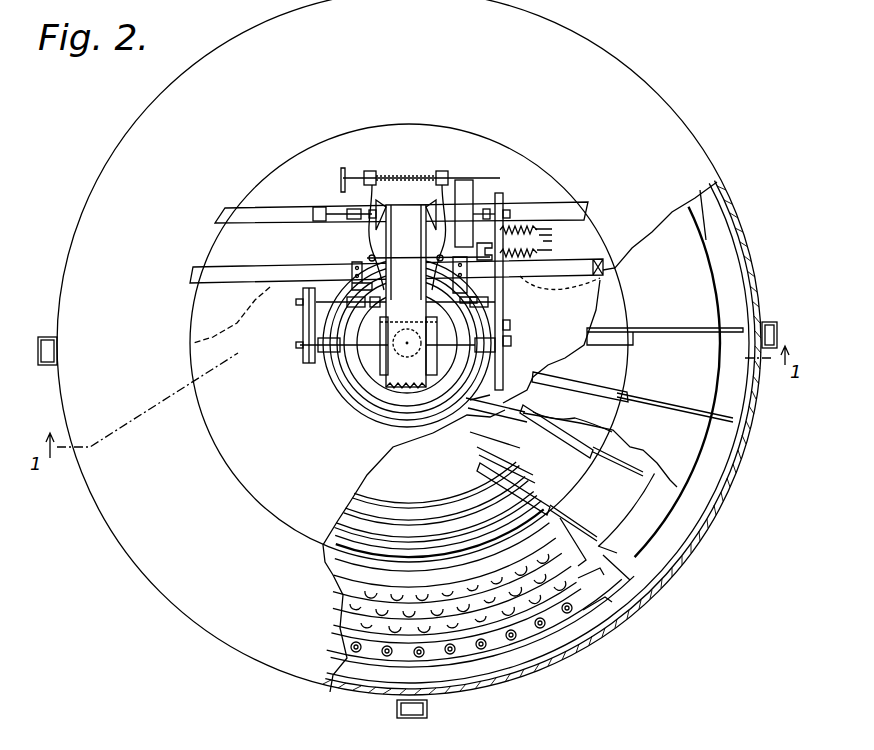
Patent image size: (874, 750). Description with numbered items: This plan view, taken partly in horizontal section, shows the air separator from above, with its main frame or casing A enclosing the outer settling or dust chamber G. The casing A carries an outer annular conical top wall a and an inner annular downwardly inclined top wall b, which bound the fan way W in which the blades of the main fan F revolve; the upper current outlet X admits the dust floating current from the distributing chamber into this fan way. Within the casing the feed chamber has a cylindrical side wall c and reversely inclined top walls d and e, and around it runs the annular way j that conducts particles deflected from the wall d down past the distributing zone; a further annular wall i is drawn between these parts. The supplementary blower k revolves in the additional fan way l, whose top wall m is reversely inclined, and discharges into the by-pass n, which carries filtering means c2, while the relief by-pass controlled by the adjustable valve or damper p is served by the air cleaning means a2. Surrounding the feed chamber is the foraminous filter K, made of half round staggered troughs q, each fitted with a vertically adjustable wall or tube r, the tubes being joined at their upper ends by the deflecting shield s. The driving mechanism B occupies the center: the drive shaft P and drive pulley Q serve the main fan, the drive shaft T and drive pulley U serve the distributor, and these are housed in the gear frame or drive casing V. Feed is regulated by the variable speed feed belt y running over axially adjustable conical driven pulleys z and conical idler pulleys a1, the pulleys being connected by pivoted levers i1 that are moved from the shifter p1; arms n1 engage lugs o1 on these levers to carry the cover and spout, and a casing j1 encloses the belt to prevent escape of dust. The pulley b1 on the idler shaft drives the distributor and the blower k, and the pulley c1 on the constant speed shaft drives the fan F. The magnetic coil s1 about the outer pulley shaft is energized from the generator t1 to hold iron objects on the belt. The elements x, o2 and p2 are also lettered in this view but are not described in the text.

The main frame or casing A is at (417, 359).
The outer annular conical top wall a is at (138, 397).
The inner annular inclined top wall b is at (489, 343).
The ring i is at (436, 498).
The cylindrical side wall c is at (512, 526).
The annular way or passage j is at (436, 527).
The filtering means c2 is at (522, 575).
The by-pass n is at (557, 545).
The inclined top wall d is at (548, 533).
The half round staggered troughs q is at (455, 613).
The vertically adjustable wall r is at (466, 655).
The foraminous filter K is at (538, 433).
The deflecting shield s is at (561, 632).
The filtering or air cleaning means a2 is at (581, 582).
The adjustable valve or damper p is at (602, 606).
The outer settling or dust chamber G is at (691, 382).
The additional fan way l is at (627, 510).
The supplementary or additional blower k is at (633, 449).
The reversely inclined wall m is at (616, 428).
The upper current outlet X is at (530, 397).
The inclined top wall e is at (540, 489).
The main fan F is at (665, 322).
The fan way W is at (712, 283).
The chain x is at (390, 272).
The lower beam o2 is at (396, 270).
The driving mechanism B is at (399, 343).
The variable speed feed belt y is at (406, 294).
The conical idler pulleys a1 is at (436, 305).
The casing j1 is at (405, 318).
The arms n1 is at (414, 280).
The shifter p1 is at (341, 177).
The conical driven pulleys z is at (432, 200).
The pivoted levers i1 is at (372, 240).
The lugs o1 is at (367, 258).
The pulley c1 is at (503, 200).
The block p2 is at (475, 220).
The magnetic coil s1 is at (520, 230).
The generator t1 is at (550, 238).
The drive shaft T is at (300, 347).
The drive pulley U is at (303, 334).
The pulley b1 is at (303, 302).
The drive shaft P is at (510, 343).
The drive pulley Q is at (506, 336).
The gear frame or drive casing V is at (483, 385).